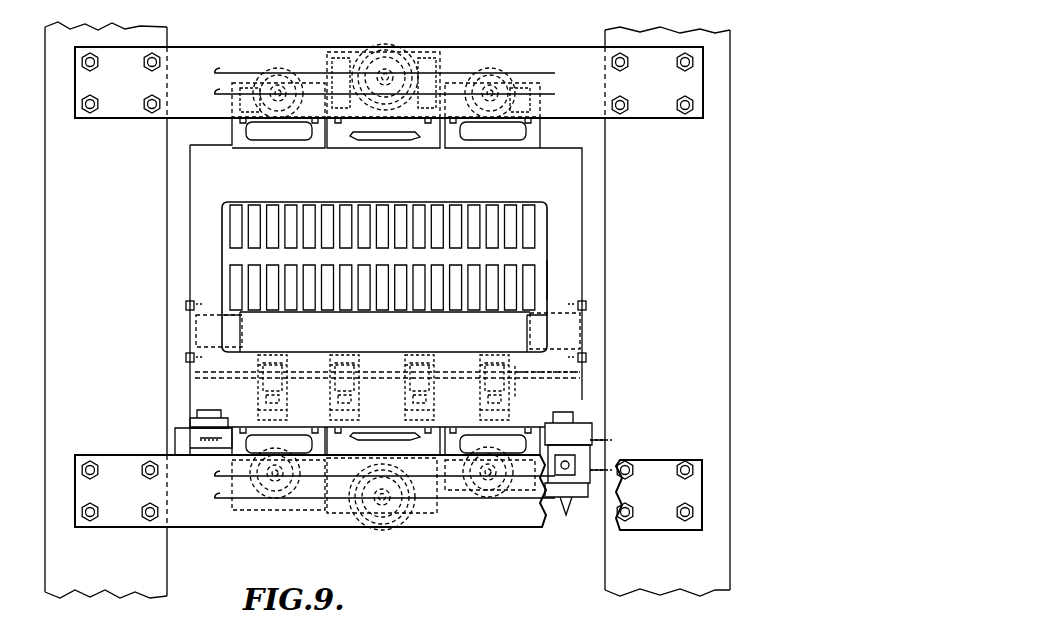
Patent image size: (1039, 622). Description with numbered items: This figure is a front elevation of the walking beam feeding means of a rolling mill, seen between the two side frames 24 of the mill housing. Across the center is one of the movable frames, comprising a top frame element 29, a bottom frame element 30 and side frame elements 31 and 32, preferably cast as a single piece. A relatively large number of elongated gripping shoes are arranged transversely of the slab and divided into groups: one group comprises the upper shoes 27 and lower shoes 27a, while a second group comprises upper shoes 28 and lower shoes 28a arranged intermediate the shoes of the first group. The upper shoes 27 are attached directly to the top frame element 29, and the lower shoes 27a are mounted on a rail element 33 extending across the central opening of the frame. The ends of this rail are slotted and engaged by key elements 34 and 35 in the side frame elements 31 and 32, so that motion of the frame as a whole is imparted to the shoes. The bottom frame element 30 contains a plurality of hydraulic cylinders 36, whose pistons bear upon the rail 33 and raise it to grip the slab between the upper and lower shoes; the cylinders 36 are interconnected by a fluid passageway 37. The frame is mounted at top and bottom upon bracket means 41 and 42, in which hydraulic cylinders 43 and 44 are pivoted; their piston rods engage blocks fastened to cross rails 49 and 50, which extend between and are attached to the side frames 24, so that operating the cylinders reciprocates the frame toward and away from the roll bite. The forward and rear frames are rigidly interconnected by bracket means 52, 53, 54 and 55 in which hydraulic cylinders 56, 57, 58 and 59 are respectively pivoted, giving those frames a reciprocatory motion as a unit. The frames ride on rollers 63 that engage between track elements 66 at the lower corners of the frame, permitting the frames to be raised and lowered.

The side frame 24 is at (387, 310).
The upper gripping shoe 27 is at (470, 208).
The lower gripping shoe 27a is at (470, 312).
The upper gripping shoe 28 is at (498, 208).
The lower gripping shoe 28a is at (480, 312).
The top frame element 29 is at (367, 286).
The bottom frame element 30 is at (387, 386).
The side frame element 31 is at (371, 277).
The side frame element 32 is at (560, 274).
The rail element 33 is at (244, 325).
The key element 34 is at (196, 331).
The key element 35 is at (560, 333).
The hydraulic cylinder 36 is at (482, 403).
The passageway 37 is at (523, 386).
The bracket means 41 is at (328, 142).
The bracket means 42 is at (383, 442).
The hydraulic cylinder 43 is at (392, 45).
The hydraulic cylinder 44 is at (378, 530).
The cross rail 49 is at (553, 47).
The cross rail 50 is at (182, 522).
The bracket means 52 is at (545, 143).
The bracket means 53 is at (232, 133).
The bracket means 54 is at (240, 449).
The bracket means 55 is at (540, 440).
The hydraulic cylinder 56 is at (492, 68).
The hydraulic cylinder 57 is at (276, 68).
The hydraulic cylinder 58 is at (478, 500).
The hydraulic cylinder 59 is at (266, 500).
The roller 63 is at (190, 432).
The track element 66 is at (197, 413).